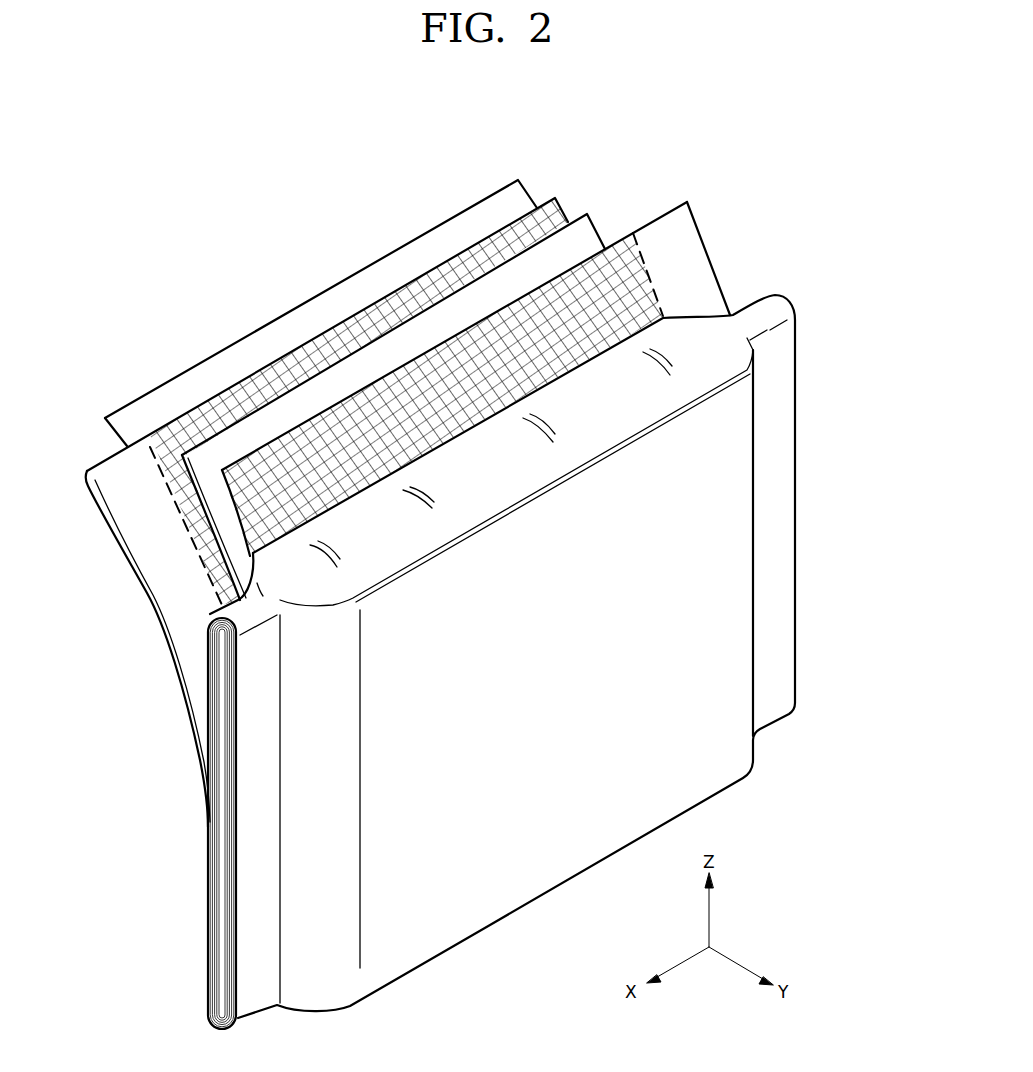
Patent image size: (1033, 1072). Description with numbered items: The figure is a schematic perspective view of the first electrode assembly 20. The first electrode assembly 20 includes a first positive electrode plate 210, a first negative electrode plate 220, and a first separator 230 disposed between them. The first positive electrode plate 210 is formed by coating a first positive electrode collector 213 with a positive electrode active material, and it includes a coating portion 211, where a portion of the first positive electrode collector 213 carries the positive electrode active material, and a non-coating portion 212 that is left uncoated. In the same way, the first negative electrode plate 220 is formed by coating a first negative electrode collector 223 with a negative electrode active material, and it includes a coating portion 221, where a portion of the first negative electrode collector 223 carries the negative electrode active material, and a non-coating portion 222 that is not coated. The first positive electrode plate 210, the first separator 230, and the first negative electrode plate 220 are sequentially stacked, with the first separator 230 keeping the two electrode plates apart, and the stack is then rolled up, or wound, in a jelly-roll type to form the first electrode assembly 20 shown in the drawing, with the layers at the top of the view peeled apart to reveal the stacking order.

The first electrode assembly 20 is at (734, 187).
The first positive electrode plate 210 is at (320, 503).
The coating portion 211 is at (188, 407).
The non-coating portion 212 is at (131, 470).
The first positive electrode collector 213 is at (132, 558).
The first negative electrode plate 220 is at (495, 330).
The coating portion 221 is at (583, 295).
The non-coating portion 222 is at (675, 225).
The first negative electrode collector 223 is at (712, 260).
The first separator 230 is at (480, 293).